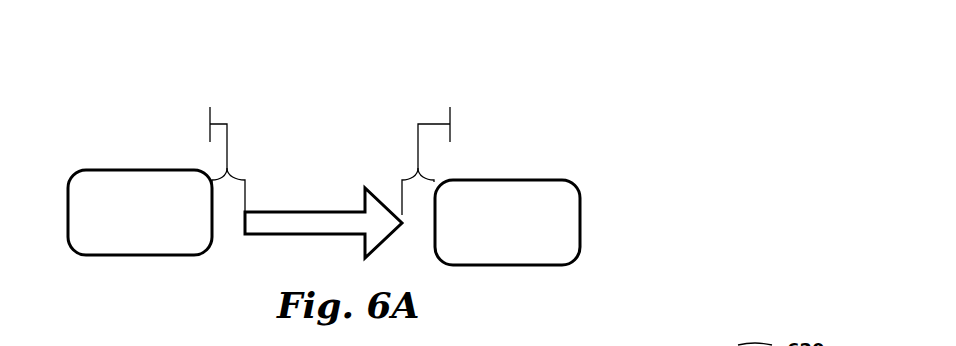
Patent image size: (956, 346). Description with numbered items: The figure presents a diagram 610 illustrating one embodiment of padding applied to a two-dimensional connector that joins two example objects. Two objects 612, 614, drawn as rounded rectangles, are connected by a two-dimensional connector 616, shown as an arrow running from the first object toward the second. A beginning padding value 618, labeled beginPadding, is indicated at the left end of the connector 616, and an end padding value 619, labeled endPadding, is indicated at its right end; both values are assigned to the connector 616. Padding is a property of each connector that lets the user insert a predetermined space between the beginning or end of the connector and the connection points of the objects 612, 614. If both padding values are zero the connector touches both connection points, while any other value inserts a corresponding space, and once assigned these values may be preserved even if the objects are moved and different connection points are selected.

The diagram 610 is at (678, 54).
The object 612 is at (97, 170).
The object 614 is at (580, 202).
The 2D connector 616 is at (336, 212).
The beginning padding value 618 is at (238, 145).
The end padding value 619 is at (440, 166).